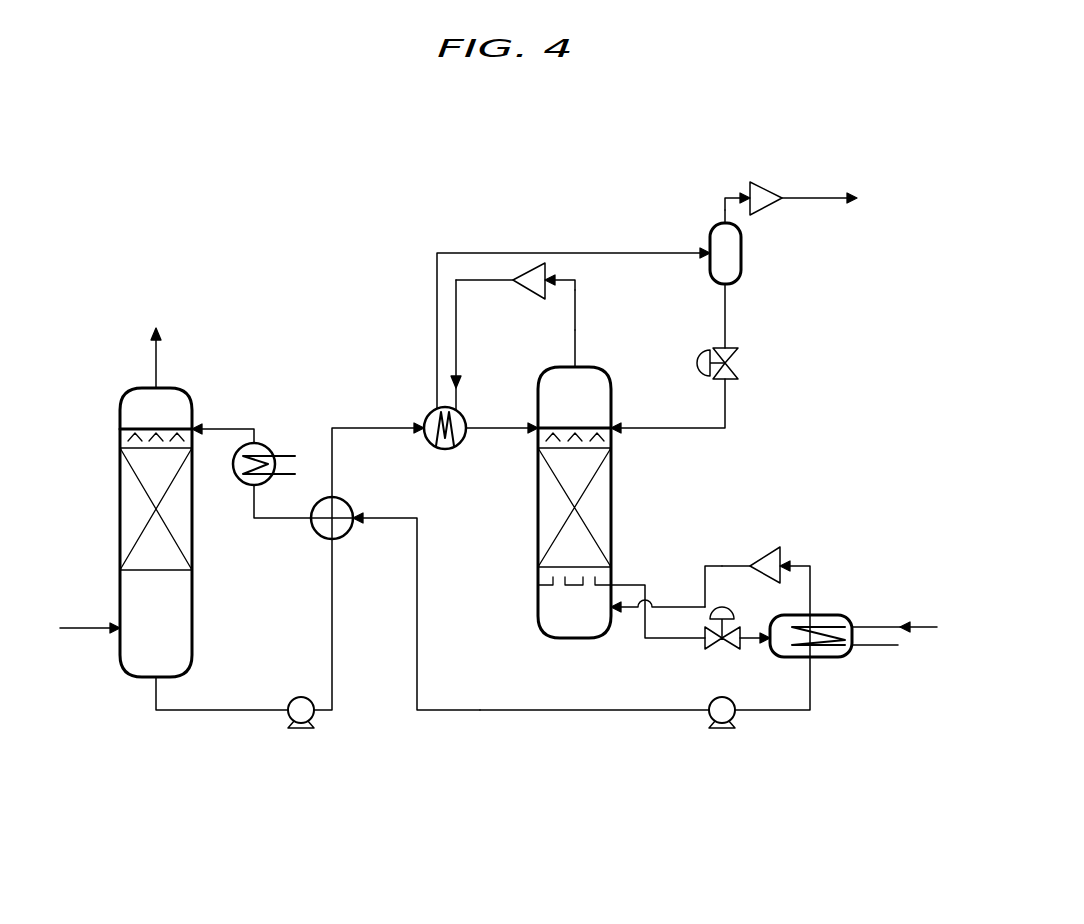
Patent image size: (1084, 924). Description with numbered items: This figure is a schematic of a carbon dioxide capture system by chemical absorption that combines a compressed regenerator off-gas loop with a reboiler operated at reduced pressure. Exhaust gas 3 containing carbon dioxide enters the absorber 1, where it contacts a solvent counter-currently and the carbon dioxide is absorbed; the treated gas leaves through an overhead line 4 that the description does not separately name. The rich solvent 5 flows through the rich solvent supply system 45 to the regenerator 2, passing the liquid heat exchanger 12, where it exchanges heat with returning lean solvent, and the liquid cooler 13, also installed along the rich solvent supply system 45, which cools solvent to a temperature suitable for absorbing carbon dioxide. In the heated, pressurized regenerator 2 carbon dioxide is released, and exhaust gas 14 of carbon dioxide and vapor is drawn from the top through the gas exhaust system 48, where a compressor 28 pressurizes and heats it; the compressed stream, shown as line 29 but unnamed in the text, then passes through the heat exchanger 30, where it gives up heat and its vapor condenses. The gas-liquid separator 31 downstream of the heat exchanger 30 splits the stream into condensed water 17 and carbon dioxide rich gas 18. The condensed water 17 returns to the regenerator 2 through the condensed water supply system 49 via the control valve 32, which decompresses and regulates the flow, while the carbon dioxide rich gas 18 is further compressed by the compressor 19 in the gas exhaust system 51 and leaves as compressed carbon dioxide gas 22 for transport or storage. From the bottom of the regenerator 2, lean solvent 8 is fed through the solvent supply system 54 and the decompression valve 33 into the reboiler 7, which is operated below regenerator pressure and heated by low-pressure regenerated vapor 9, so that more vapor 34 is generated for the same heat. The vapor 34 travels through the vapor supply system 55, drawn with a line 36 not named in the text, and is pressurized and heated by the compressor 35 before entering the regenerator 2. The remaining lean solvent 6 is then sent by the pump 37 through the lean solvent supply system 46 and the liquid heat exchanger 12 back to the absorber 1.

The absorber 1 is at (119, 500).
The regenerator 2 is at (539, 384).
The exhaust gas 3 is at (85, 630).
The overhead outlet line 4 is at (155, 357).
The rich solvent 5 is at (261, 713).
The lean solvent 6 is at (485, 713).
The reboiler 7 is at (831, 615).
The lean solvent 8 is at (628, 583).
The low-pressure regenerated vapor 9 is at (925, 626).
The liquid heat exchanger 12 is at (351, 510).
The liquid cooler 13 is at (269, 450).
The exhaust gas 14 is at (576, 347).
The condensed water 17 is at (727, 406).
The CO2 rich gas 18 is at (724, 212).
The compressor 19 is at (766, 182).
The compressed CO2 gas 22 is at (820, 197).
The compressor 28 is at (548, 270).
The compressed vapor line 29 is at (457, 392).
The heat exchanger 30 is at (437, 408).
The gas-liquid separator 31 is at (742, 254).
The control valve 32 is at (741, 364).
The decompression valve 33 is at (725, 652).
The vapor 34 is at (811, 572).
The compressor 35 is at (771, 548).
The line 36 is at (708, 563).
The pump 37 is at (722, 730).
The rich solvent supply system 45 is at (212, 709).
The lean solvent supply system 46 is at (587, 709).
The gas exhaust system 48 is at (576, 312).
The condensed water supply system 49 is at (727, 315).
The gas exhaust system 51 is at (723, 216).
The solvent supply system 54 is at (651, 585).
The vapor supply system 55 is at (742, 565).